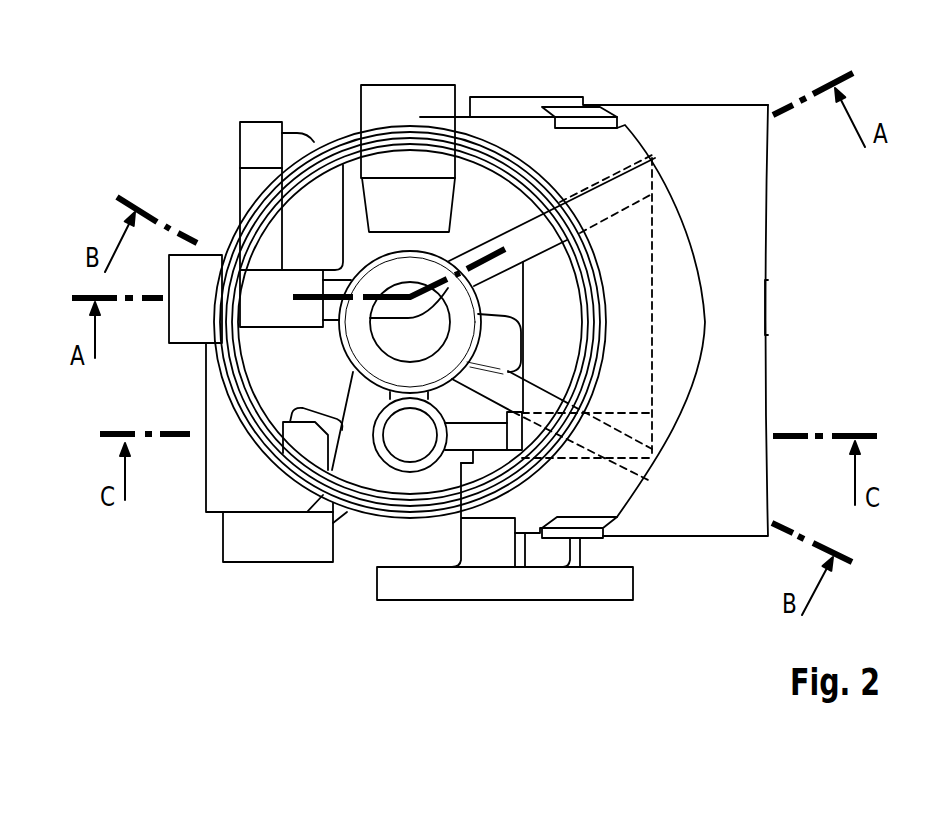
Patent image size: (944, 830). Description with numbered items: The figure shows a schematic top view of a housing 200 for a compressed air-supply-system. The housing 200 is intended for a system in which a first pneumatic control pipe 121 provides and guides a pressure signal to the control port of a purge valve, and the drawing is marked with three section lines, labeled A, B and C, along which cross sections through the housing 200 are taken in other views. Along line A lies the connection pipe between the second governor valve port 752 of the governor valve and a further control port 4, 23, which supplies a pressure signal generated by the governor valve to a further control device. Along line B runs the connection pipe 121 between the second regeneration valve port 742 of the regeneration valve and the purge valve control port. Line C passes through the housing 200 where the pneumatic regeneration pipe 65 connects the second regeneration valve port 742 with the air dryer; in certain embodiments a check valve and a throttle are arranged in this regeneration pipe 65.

The housing 200 is at (296, 72).
The second governor valve port 752 is at (640, 180).
The second regeneration valve port 742 is at (758, 423).
The further control port 4 is at (127, 330).
The further control port 23 is at (180, 332).
The first pneumatic control pipe 121 is at (507, 392).
The pneumatic regeneration pipe 65 is at (568, 452).